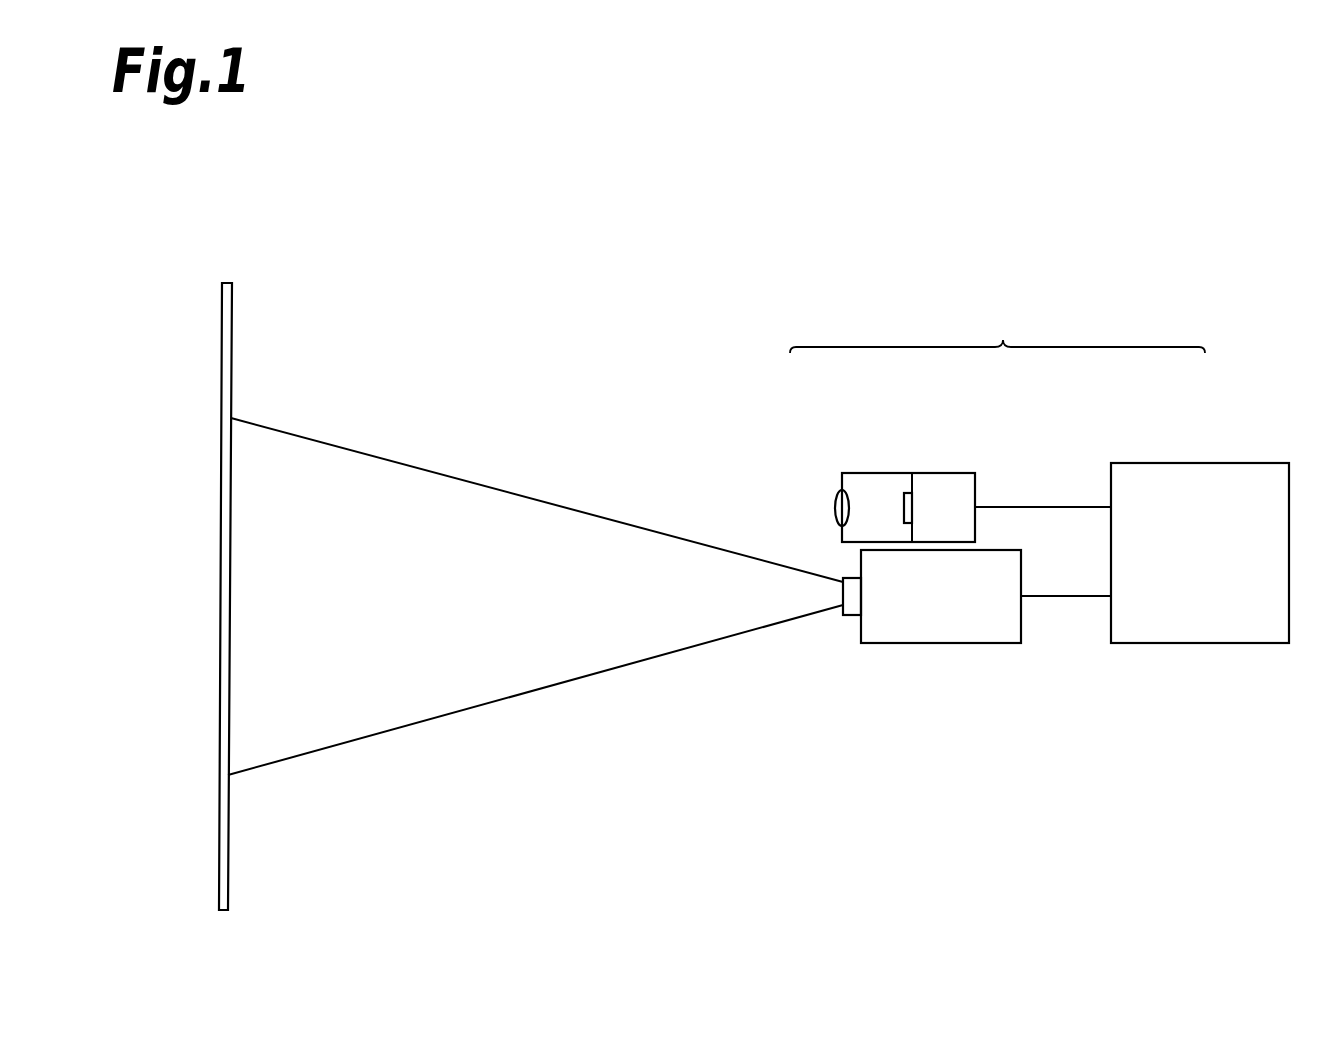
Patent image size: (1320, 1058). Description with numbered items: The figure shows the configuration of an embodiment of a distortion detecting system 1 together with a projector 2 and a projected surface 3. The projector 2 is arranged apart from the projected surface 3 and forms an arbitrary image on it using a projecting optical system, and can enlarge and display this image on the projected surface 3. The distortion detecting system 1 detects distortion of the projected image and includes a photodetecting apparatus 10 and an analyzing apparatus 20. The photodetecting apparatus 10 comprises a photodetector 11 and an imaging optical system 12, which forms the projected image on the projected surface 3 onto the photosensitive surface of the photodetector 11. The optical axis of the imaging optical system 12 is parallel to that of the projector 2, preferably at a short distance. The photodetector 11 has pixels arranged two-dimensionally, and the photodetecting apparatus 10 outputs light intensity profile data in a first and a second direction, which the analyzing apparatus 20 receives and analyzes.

The distortion detecting system 1 is at (997, 327).
The projector 2 is at (931, 645).
The projected surface 3 is at (229, 875).
The photodetecting apparatus 10 is at (952, 472).
The photodetector 11 is at (900, 500).
The imaging optical system 12 is at (838, 498).
The analyzing apparatus 20 is at (1172, 462).